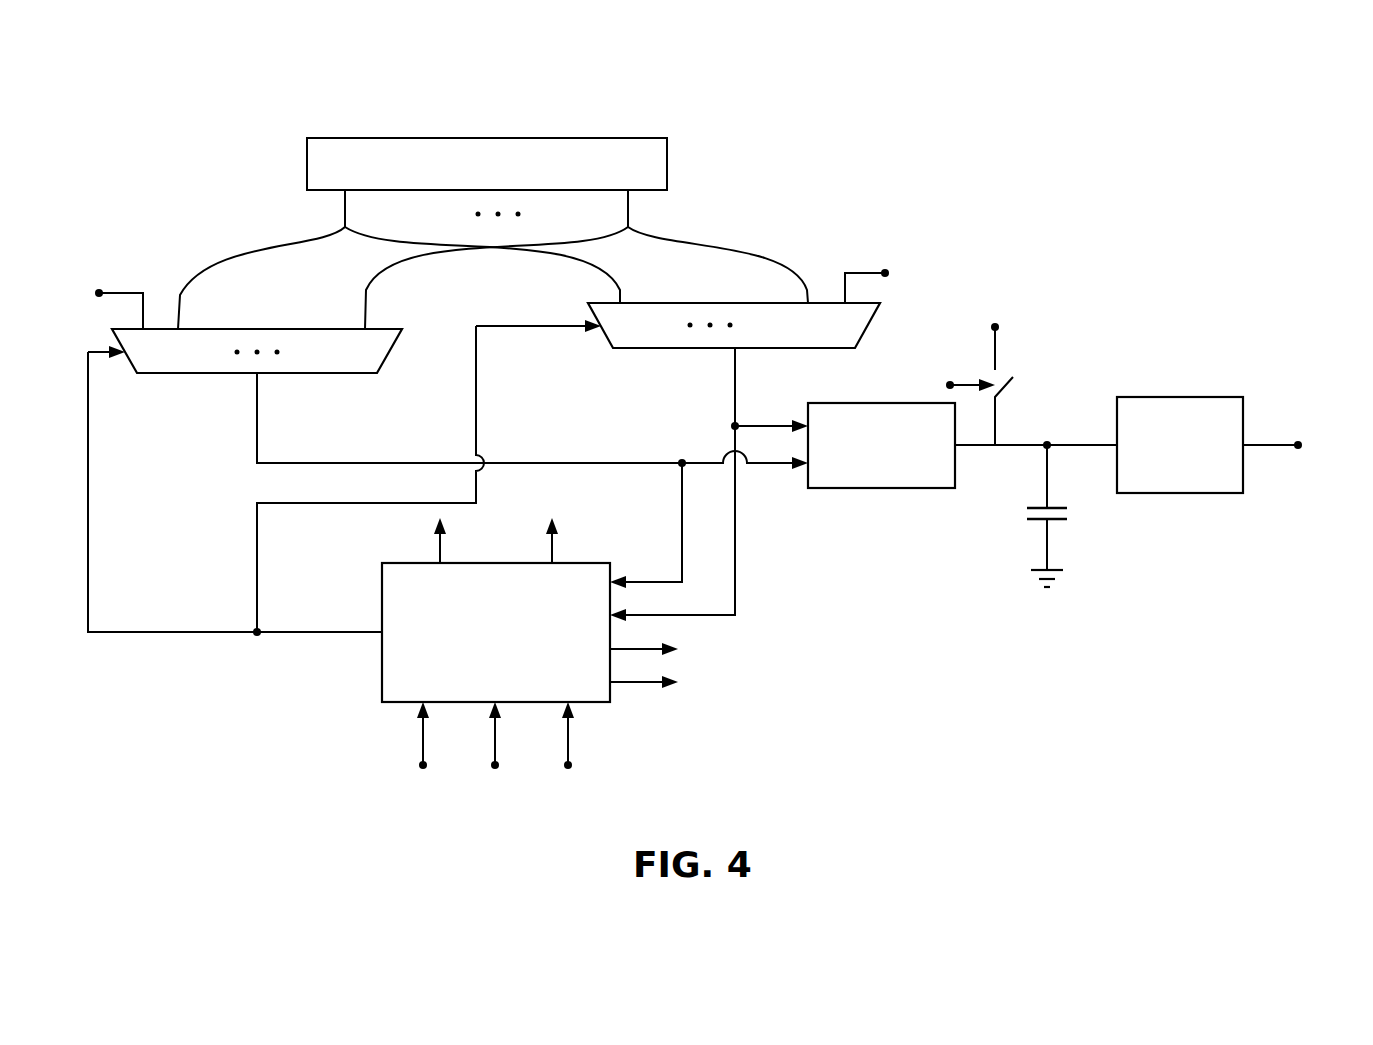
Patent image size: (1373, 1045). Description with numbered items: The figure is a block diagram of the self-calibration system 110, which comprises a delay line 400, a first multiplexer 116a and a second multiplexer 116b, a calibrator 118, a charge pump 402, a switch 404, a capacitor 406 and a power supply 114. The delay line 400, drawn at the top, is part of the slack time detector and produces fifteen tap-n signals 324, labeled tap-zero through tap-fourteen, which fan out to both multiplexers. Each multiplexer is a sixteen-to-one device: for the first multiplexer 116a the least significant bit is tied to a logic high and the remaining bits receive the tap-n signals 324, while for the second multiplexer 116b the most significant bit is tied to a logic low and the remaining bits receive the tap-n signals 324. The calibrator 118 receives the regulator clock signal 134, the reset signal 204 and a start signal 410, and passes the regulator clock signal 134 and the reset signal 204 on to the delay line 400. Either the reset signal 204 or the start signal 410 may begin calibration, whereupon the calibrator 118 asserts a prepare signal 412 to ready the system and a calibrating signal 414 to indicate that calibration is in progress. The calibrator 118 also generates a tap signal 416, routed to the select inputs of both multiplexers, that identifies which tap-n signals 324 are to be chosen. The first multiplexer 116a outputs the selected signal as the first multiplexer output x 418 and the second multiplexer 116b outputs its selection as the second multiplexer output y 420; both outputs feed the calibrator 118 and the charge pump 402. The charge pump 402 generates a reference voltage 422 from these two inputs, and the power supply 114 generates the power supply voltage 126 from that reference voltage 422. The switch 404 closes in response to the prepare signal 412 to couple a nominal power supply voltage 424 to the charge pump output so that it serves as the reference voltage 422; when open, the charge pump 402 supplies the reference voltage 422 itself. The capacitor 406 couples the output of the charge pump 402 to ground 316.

The self-calibration system 110 is at (143, 182).
The delay line 400 is at (667, 166).
The tap-n signals 324 is at (258, 255).
The first multiplexer 116a is at (356, 375).
The second multiplexer 116b is at (805, 350).
The first multiplexer output 418 is at (257, 434).
The second multiplexer output 420 is at (735, 396).
The tap signal 416 is at (257, 640).
The calibrator 118 is at (477, 666).
The regulator clock signal 134 is at (438, 521).
The reset signal 204 is at (556, 521).
The start signal 410 is at (495, 769).
The calibrating signal 414 is at (680, 649).
The prepare signal 412 is at (680, 682).
The charge pump 402 is at (868, 494).
The switch 404 is at (1013, 384).
The nominal power supply voltage 424 is at (995, 327).
The reference voltage 422 is at (1047, 445).
The capacitor 406 is at (1027, 513).
The ground 316 is at (1040, 578).
The power supply 114 is at (1170, 494).
The power supply voltage 126 is at (1298, 449).